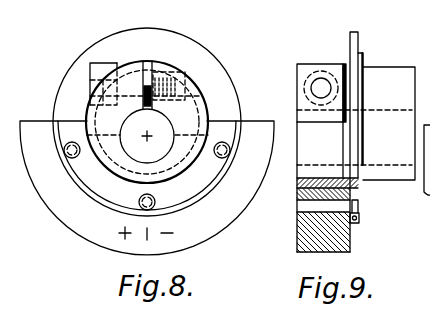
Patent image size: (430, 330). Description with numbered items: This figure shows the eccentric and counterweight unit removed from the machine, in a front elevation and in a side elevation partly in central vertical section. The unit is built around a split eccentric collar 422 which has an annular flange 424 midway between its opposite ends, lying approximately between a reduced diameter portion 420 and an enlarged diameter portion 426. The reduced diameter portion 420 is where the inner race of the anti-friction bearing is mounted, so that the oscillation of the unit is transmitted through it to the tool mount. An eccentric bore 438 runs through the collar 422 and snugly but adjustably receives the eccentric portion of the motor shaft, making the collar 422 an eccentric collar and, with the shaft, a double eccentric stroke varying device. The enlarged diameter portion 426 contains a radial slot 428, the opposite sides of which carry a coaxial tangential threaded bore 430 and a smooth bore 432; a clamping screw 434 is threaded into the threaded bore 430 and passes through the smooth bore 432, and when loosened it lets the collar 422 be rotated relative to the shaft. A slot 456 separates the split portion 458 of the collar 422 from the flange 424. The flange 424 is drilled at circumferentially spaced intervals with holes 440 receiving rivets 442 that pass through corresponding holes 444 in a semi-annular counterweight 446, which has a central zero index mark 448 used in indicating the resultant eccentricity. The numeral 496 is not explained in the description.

In FIG. 8, the reduced diameter portion 420 is at (130, 209).
In FIG. 9, the reduced diameter portion 420 is at (399, 77).
In FIG. 8, the split eccentric collar 422 is at (186, 116).
In FIG. 9, the split eccentric collar 422 is at (297, 111).
In FIG. 8, the annular flange 424 is at (200, 31).
In FIG. 9, the annular flange 424 is at (362, 52).
In FIG. 9, the enlarged diameter portion 426 is at (297, 82).
In FIG. 8, the radial slot 428 is at (146, 60).
In FIG. 8, the threaded bore 430 is at (172, 62).
In FIG. 9, the threaded bore 430 is at (322, 78).
In FIG. 8, the smooth bore 432 is at (131, 60).
In FIG. 8, the clamping screw 434 is at (91, 88).
In FIG. 8, the eccentric bore 438 is at (131, 121).
In FIG. 9, the eccentric bore 438 is at (375, 112).
In FIG. 9, the holes 440 is at (359, 219).
In FIG. 8, the rivets 442 is at (157, 201).
In FIG. 9, the rivets 442 is at (298, 207).
In FIG. 9, the holes 444 is at (298, 242).
In FIG. 8, the semi-annular counterweight 446 is at (90, 235).
In FIG. 9, the semi-annular counterweight 446 is at (340, 247).
In FIG. 8, the central zero index mark 448 is at (141, 236).
In FIG. 9, the slot 456 is at (347, 64).
In FIG. 8, the split portion 458 is at (168, 68).
In FIG. 9, the split portion 458 is at (305, 66).
In FIG. 8, the lead 496 is at (104, 0).